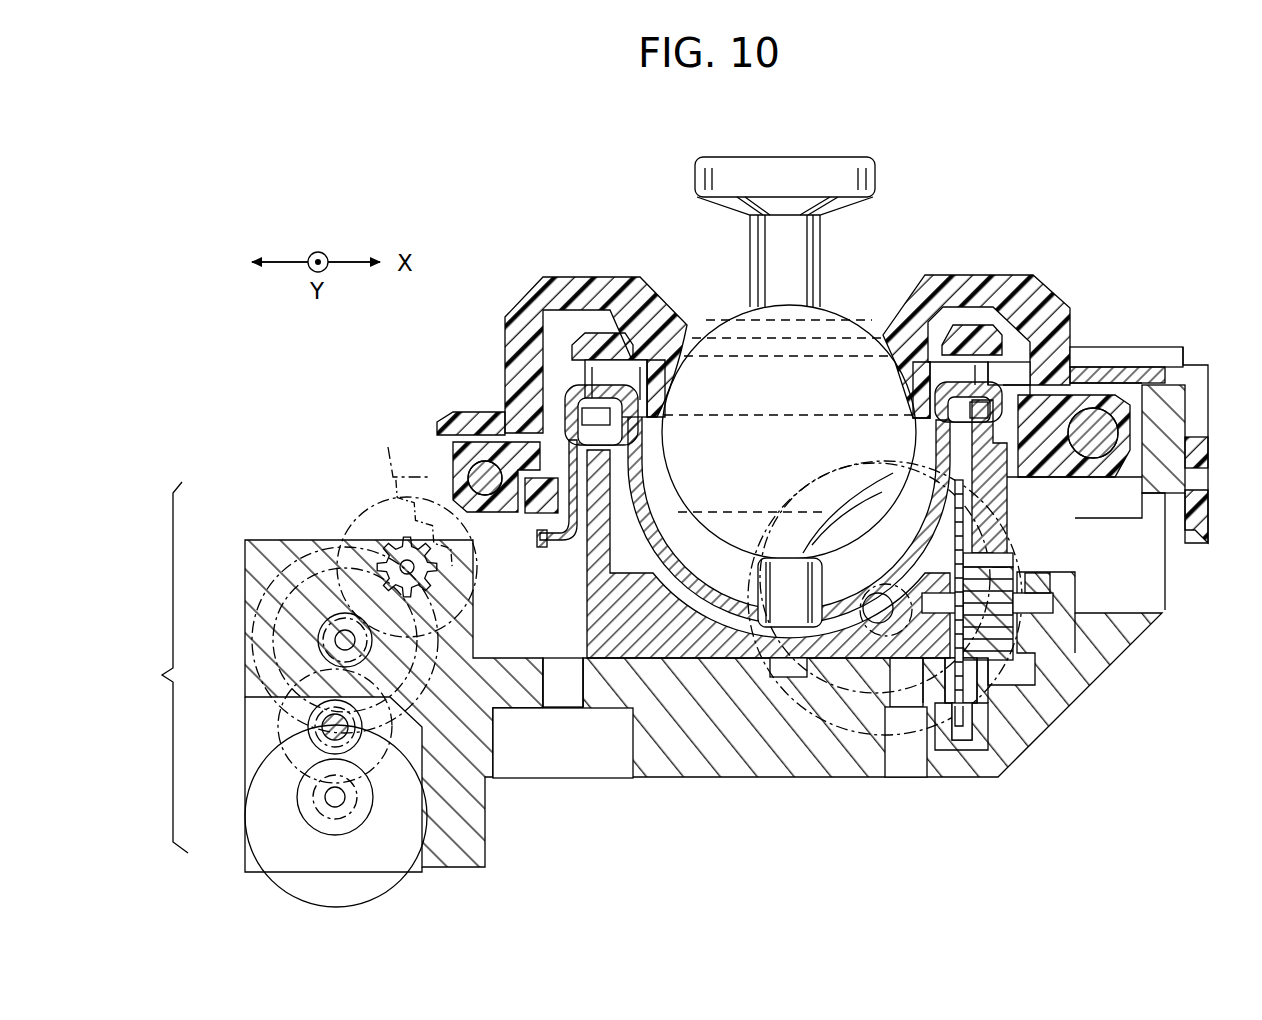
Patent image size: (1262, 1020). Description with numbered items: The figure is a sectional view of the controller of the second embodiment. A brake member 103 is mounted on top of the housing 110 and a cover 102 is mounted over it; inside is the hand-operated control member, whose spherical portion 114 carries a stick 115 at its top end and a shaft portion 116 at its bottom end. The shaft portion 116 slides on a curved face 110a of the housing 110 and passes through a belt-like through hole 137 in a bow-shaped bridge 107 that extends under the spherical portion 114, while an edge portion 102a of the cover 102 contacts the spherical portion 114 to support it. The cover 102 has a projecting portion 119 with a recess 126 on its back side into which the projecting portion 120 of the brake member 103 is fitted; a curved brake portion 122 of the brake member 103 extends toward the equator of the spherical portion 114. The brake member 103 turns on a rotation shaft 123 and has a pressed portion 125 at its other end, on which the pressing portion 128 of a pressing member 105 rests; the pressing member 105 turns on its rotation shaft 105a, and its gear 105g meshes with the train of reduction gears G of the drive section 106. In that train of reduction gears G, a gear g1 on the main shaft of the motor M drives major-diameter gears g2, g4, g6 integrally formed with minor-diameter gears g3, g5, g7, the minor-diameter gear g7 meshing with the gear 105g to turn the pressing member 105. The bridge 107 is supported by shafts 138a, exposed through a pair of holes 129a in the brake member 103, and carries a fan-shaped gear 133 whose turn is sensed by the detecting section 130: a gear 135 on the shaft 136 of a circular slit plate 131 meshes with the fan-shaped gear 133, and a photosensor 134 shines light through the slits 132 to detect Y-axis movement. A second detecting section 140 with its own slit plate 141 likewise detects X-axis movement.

The cover 102 is at (1145, 380).
The edge portion 102a is at (672, 308).
The brake member 103 is at (1068, 408).
The pressing member 105 is at (465, 460).
The rotation shaft 105a is at (483, 490).
The gear 105g is at (402, 492).
The drive section 106 is at (325, 455).
The bow-shaped bridge 107 is at (648, 463).
The housing 110 is at (1080, 670).
The curved face 110a is at (600, 720).
The spherical portion 114 is at (826, 360).
The stick 115 is at (862, 165).
The shaft portion 116 is at (760, 643).
The projecting portion 119 is at (522, 305).
The projecting portion 120 is at (602, 330).
The brake portion 122 is at (662, 388).
The rotation shaft 123 is at (1122, 397).
The pressed portion 125 is at (547, 500).
The recess 126 is at (575, 325).
The pressing portion 128 is at (483, 413).
The holes 129a is at (627, 368).
The detecting section 130 is at (1000, 712).
The circular slit plate 131 is at (965, 735).
The slits 132 is at (963, 738).
The fan-shaped gear 133 is at (1002, 502).
The photosensor 134 is at (943, 737).
The gear 135 is at (1013, 560).
The shaft 136 is at (1038, 603).
The through hole 137 is at (563, 743).
The shafts 138a is at (518, 383).
The detecting section 140 is at (830, 735).
The slit plate 141 is at (867, 737).
The gear g1 is at (265, 803).
The major-diameter gear g2 is at (262, 758).
The minor-diameter gear g3 is at (265, 705).
The major-diameter gear g4 is at (262, 632).
The minor-diameter gear g5 is at (262, 572).
The major-diameter gear g6 is at (340, 522).
The minor-diameter gear g7 is at (365, 495).
The train of reduction gears G is at (156, 667).
The motor M is at (382, 883).